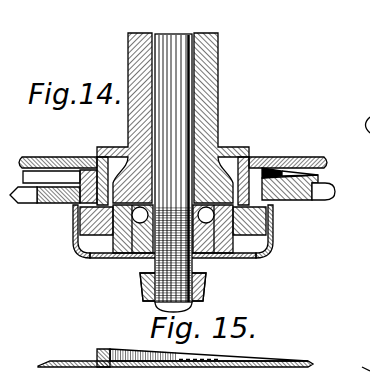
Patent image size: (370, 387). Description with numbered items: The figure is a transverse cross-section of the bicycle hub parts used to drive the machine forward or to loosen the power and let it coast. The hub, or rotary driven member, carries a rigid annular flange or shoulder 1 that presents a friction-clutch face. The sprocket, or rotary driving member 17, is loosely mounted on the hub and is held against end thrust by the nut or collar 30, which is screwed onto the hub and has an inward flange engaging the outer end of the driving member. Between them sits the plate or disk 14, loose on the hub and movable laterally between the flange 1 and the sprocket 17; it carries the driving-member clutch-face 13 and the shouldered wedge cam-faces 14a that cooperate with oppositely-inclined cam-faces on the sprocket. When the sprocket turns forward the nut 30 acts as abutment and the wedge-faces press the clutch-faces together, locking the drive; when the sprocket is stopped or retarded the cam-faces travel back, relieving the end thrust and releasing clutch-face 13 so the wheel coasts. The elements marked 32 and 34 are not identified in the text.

In FIG. 14, the annular flange or shoulder 1 is at (249, 159).
In FIG. 14, the clutch-face 13 is at (283, 166).
In FIG. 15, the clutch-face 13 is at (286, 364).
In FIG. 14, the plate or disk 14 is at (318, 175).
In FIG. 14, the rotary driving member 17 is at (335, 192).
In FIG. 14, the nut or collar 30 is at (273, 239).
In FIG. 14, the bearing race block 32 is at (268, 218).
In FIG. 14, the bottom plate 34 is at (207, 257).
In FIG. 15, the shouldered wedge cam-face 14a is at (96, 362).